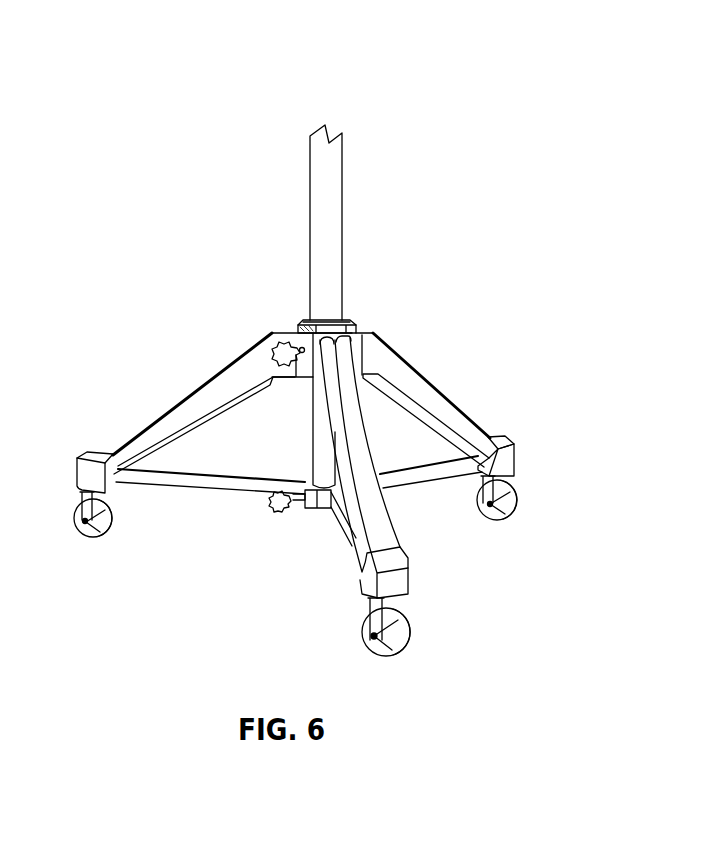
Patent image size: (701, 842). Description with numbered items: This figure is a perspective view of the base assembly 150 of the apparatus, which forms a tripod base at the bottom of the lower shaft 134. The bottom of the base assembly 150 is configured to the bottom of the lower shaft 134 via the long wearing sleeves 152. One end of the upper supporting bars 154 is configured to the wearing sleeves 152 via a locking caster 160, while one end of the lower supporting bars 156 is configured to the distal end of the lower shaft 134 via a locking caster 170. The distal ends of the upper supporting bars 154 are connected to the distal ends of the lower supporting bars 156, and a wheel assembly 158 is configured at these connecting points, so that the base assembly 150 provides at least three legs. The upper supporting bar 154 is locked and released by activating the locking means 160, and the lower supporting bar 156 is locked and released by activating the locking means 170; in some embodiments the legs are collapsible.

The base assembly 150 is at (402, 73).
The lower shaft 134 is at (325, 228).
The wearing sleeves 152 is at (301, 326).
The upper supporting bars 154 is at (432, 392).
The lower supporting bars 156 is at (186, 482).
The wheel assembly 158 is at (86, 532).
The locking caster 160 is at (276, 350).
The locking caster 170 is at (283, 510).